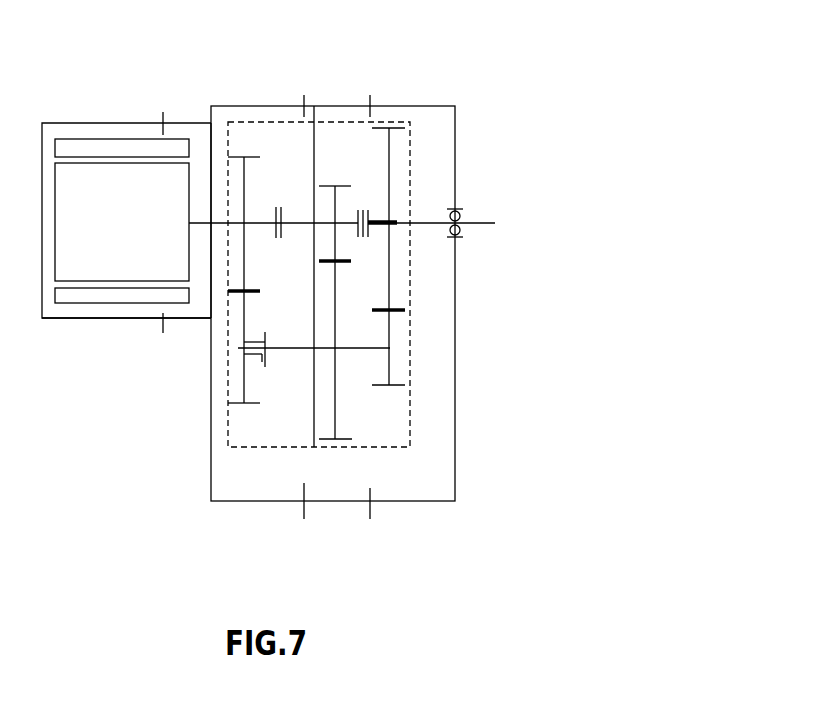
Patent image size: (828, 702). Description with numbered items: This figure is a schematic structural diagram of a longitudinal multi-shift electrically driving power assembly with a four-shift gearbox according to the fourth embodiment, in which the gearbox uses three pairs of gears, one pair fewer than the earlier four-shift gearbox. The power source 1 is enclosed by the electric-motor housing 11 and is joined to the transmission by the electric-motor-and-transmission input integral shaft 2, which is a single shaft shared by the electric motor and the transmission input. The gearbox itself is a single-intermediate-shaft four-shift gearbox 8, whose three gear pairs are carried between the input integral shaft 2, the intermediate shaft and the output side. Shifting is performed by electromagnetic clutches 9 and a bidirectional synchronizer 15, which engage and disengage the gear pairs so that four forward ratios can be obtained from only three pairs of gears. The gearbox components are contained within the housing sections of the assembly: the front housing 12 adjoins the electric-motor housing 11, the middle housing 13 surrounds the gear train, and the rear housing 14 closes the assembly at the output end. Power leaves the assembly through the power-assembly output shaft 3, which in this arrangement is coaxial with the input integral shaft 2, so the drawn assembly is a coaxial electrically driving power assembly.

The power source 1 is at (118, 242).
The electric-motor-and-transmission input integral shaft 2 is at (202, 222).
The power-assembly output shaft 3 is at (477, 223).
The single-intermediate-shaft four-shift gearbox 8 is at (332, 448).
The electromagnetic clutches 9 is at (275, 218).
The electric-motor housing 11 is at (138, 318).
The front housing 12 is at (198, 320).
The middle housing 13 is at (360, 501).
The rear housing 14 is at (437, 501).
The bidirectional synchronizer 15 is at (368, 218).